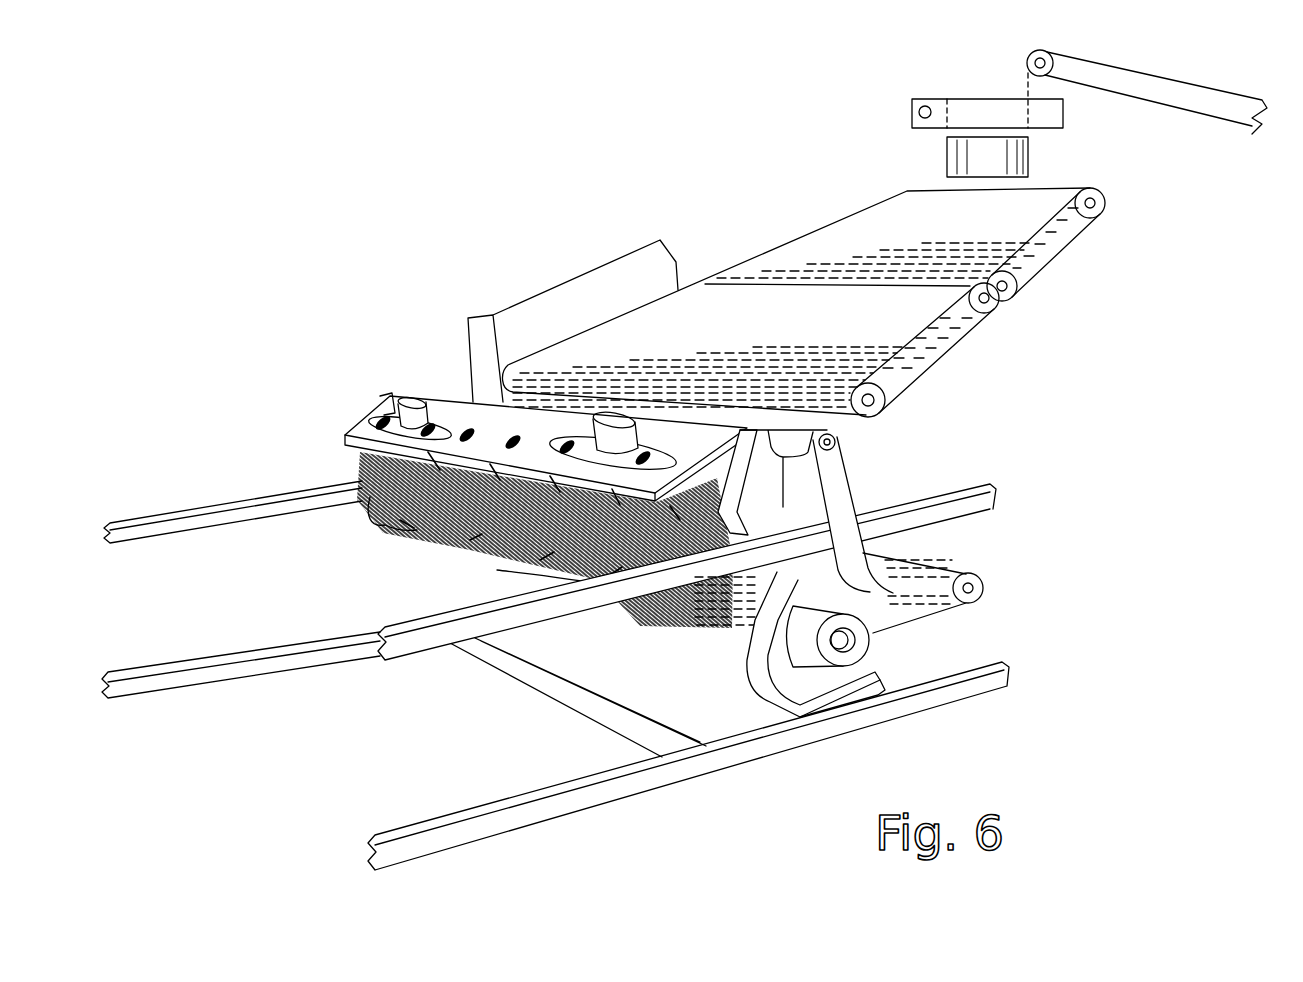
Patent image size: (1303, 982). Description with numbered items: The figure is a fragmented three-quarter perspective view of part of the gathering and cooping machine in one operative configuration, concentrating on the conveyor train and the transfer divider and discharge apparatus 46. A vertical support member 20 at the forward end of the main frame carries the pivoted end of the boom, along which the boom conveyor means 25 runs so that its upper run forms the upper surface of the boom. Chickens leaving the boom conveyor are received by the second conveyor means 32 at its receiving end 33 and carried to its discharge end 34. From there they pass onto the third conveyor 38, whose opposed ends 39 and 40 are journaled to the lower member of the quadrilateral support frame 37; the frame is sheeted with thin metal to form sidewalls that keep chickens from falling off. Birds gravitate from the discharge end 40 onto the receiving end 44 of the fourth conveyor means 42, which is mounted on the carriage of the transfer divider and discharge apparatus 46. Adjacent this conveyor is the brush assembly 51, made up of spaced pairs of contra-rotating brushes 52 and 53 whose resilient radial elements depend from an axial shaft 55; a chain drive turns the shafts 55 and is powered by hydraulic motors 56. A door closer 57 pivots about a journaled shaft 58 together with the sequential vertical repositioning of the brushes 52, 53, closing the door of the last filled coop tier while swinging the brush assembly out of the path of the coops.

The support member 20 is at (900, 110).
The boom conveyor means 25 is at (1205, 80).
The second conveyor means 32 is at (929, 230).
The receiving end 33 is at (1103, 209).
The discharge end 34 is at (1013, 294).
The support frame 37 is at (560, 323).
The third conveyor 38 is at (755, 331).
The end of third conveyor 39 is at (993, 309).
The discharge end of third conveyor 40 is at (883, 411).
The fourth conveyor means 42 is at (930, 557).
The receiving end 44 is at (850, 648).
The transfer divider and discharge apparatus 46 is at (330, 442).
The brush assembly 51 is at (360, 513).
The brush 52 is at (468, 547).
The brush 53 is at (545, 567).
The axial shaft 55 is at (565, 444).
The hydraulic motor 56 is at (412, 402).
The door closer 57 is at (760, 655).
The journaled shaft 58 is at (838, 442).